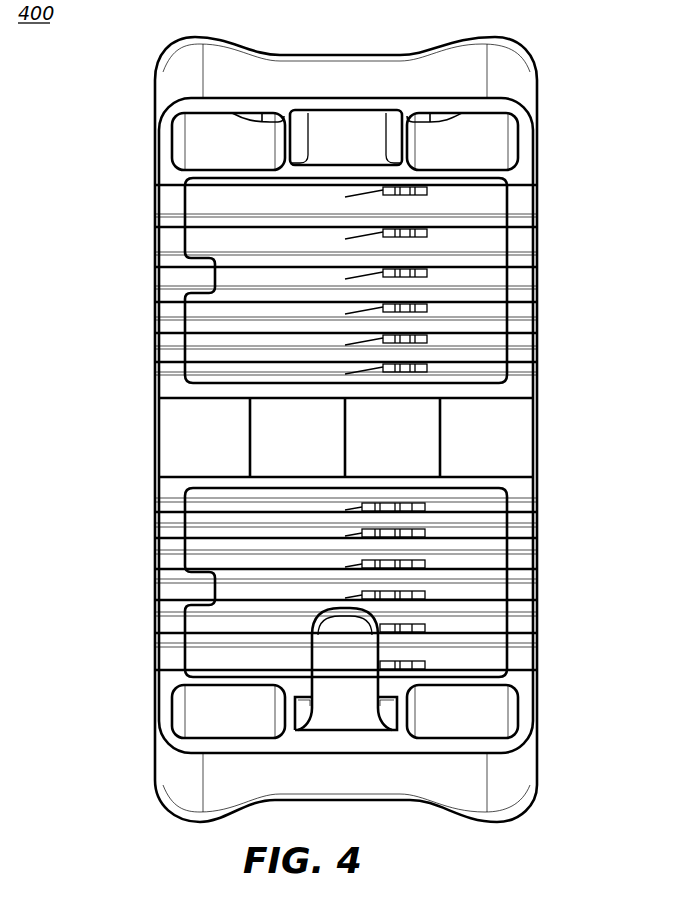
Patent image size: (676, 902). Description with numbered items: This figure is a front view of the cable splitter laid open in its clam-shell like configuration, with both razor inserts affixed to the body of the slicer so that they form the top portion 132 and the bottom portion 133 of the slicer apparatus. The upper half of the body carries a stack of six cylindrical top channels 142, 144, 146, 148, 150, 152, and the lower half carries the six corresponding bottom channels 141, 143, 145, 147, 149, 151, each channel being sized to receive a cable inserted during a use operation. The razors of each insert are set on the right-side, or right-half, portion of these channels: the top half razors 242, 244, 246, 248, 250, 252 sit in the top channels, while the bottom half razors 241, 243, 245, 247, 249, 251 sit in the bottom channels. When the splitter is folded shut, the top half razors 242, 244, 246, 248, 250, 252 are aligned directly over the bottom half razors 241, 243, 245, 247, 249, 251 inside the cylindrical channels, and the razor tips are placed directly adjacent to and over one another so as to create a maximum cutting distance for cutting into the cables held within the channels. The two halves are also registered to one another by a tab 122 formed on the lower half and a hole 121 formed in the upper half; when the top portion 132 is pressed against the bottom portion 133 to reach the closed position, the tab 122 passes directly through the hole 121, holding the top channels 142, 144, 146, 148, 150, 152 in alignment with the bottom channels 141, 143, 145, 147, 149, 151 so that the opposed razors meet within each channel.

The hole 121 is at (330, 138).
The tab 122 is at (338, 662).
The top portion 132 is at (515, 78).
The bottom portion 133 is at (518, 767).
The top channel 142 is at (522, 199).
The top channel 144 is at (522, 235).
The top channel 146 is at (522, 271).
The top channel 148 is at (522, 306).
The top channel 150 is at (522, 335).
The top channel 152 is at (522, 366).
The bottom channel 141 is at (522, 653).
The bottom channel 143 is at (522, 619).
The bottom channel 145 is at (522, 590).
The bottom channel 147 is at (522, 563).
The bottom channel 149 is at (522, 536).
The bottom channel 151 is at (522, 510).
The top half razor 242 is at (383, 188).
The top half razor 244 is at (383, 231).
The top half razor 246 is at (383, 271).
The top half razor 248 is at (383, 306).
The top half razor 250 is at (383, 337).
The top half razor 252 is at (383, 365).
The bottom half razor 241 is at (387, 662).
The bottom half razor 243 is at (318, 614).
The bottom half razor 245 is at (350, 596).
The bottom half razor 247 is at (350, 561).
The bottom half razor 249 is at (350, 533).
The bottom half razor 251 is at (350, 508).